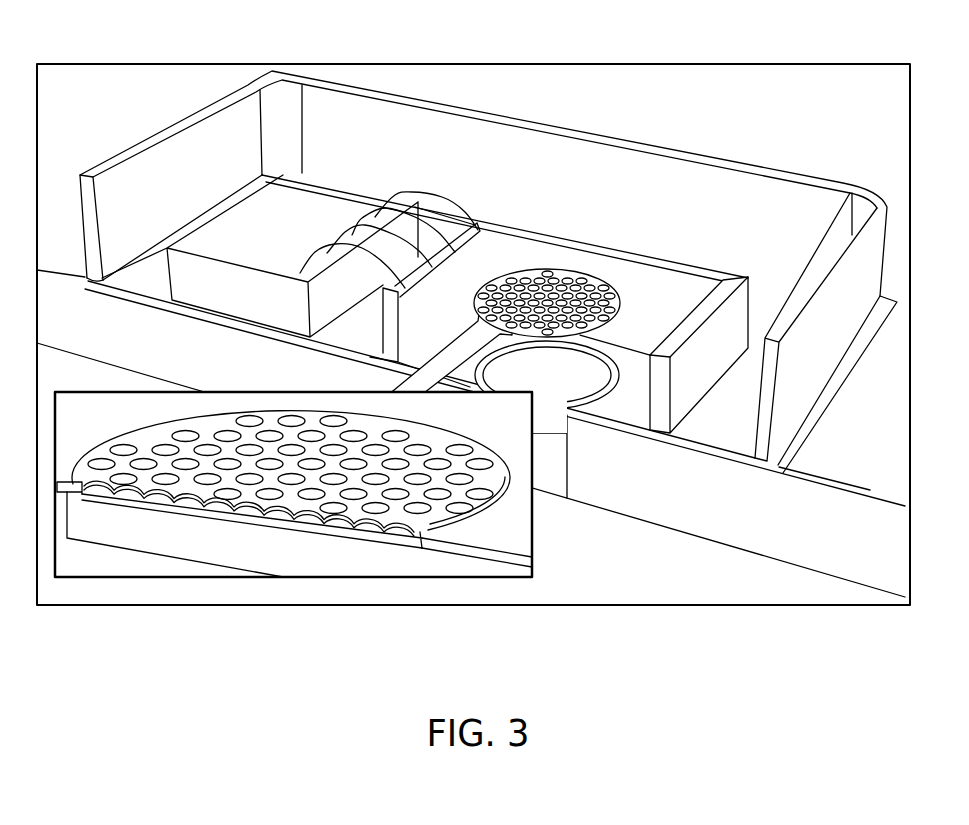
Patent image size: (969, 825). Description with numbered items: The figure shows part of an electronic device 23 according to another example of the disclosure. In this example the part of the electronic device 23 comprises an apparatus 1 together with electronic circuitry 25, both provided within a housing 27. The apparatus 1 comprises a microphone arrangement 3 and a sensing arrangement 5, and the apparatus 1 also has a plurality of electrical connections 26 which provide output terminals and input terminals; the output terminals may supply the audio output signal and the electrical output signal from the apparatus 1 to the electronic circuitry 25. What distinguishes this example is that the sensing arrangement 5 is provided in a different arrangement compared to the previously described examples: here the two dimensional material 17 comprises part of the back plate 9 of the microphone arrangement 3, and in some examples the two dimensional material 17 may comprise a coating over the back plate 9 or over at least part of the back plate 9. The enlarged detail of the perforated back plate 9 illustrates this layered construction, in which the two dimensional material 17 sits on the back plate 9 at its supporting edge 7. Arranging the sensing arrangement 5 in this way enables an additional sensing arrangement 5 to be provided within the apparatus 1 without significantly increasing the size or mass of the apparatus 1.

The apparatus 1 is at (692, 290).
The microphone arrangement 3 is at (467, 565).
The sensing arrangement 5 is at (296, 533).
The frame 7 is at (355, 544).
The back plate 9 is at (463, 508).
The two dimensional material 17 is at (348, 531).
The electronic device 23 is at (732, 388).
The electronic circuitry 25 is at (325, 203).
The electrical connections 26 is at (452, 202).
The housing 27 is at (673, 188).